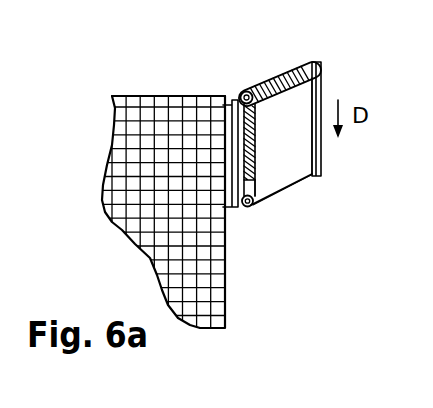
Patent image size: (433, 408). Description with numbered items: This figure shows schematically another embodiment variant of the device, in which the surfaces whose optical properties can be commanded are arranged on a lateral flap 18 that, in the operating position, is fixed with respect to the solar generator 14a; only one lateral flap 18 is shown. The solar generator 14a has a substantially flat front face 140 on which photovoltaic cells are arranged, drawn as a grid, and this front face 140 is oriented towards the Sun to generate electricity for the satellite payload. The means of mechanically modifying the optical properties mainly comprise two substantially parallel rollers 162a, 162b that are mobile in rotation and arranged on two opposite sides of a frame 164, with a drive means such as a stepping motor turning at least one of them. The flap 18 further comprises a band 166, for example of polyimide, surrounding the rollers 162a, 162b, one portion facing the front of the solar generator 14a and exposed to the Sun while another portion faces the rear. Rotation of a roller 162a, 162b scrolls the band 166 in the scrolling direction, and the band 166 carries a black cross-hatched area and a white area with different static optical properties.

The front face 140 is at (133, 111).
The solar generator 14a is at (201, 96).
The roller 162a is at (252, 87).
The roller 162b is at (256, 193).
The frame 164 is at (235, 208).
The band 166 is at (293, 148).
The lateral flap 18 is at (320, 63).